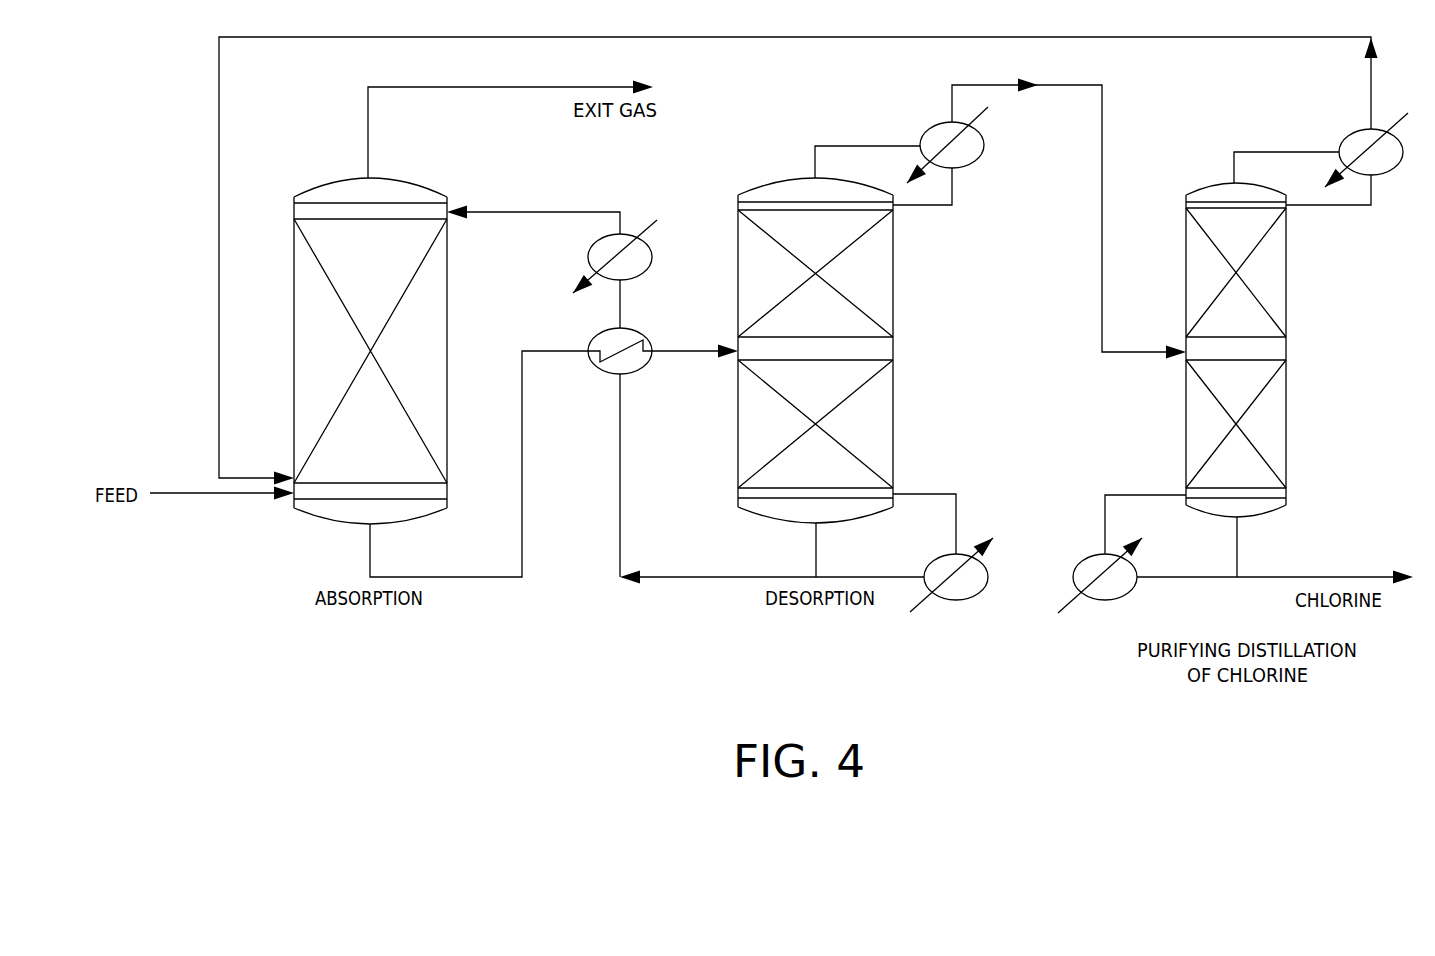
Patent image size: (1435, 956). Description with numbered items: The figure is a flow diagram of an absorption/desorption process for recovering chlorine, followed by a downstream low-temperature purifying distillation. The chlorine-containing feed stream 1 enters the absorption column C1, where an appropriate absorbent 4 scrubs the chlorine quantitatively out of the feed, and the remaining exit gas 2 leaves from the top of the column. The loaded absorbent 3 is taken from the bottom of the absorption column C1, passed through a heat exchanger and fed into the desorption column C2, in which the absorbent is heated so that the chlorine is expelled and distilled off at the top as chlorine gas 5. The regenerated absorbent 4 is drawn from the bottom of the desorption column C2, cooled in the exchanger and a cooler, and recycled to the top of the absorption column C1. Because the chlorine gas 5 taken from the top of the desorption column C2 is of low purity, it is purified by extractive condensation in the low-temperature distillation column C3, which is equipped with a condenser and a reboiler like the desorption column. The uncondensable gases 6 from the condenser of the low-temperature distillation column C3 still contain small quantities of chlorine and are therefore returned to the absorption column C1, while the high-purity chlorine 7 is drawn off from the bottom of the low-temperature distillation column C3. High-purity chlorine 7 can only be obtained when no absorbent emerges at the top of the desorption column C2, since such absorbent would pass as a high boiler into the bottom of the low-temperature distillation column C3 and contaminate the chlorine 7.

The chlorine-containing feed stream 1 is at (222, 509).
The exit gas line 2 is at (510, 119).
The loaded absorbent 3 is at (554, 452).
The absorbent 4 is at (720, 409).
The chlorine gas 5 is at (1000, 209).
The uncondensable gases 6 is at (813, 261).
The high-purity chlorine 7 is at (1235, 554).
The absorption column C1 is at (387, 351).
The desorption column C2 is at (831, 350).
The low-temperature distillation column C3 is at (1254, 350).